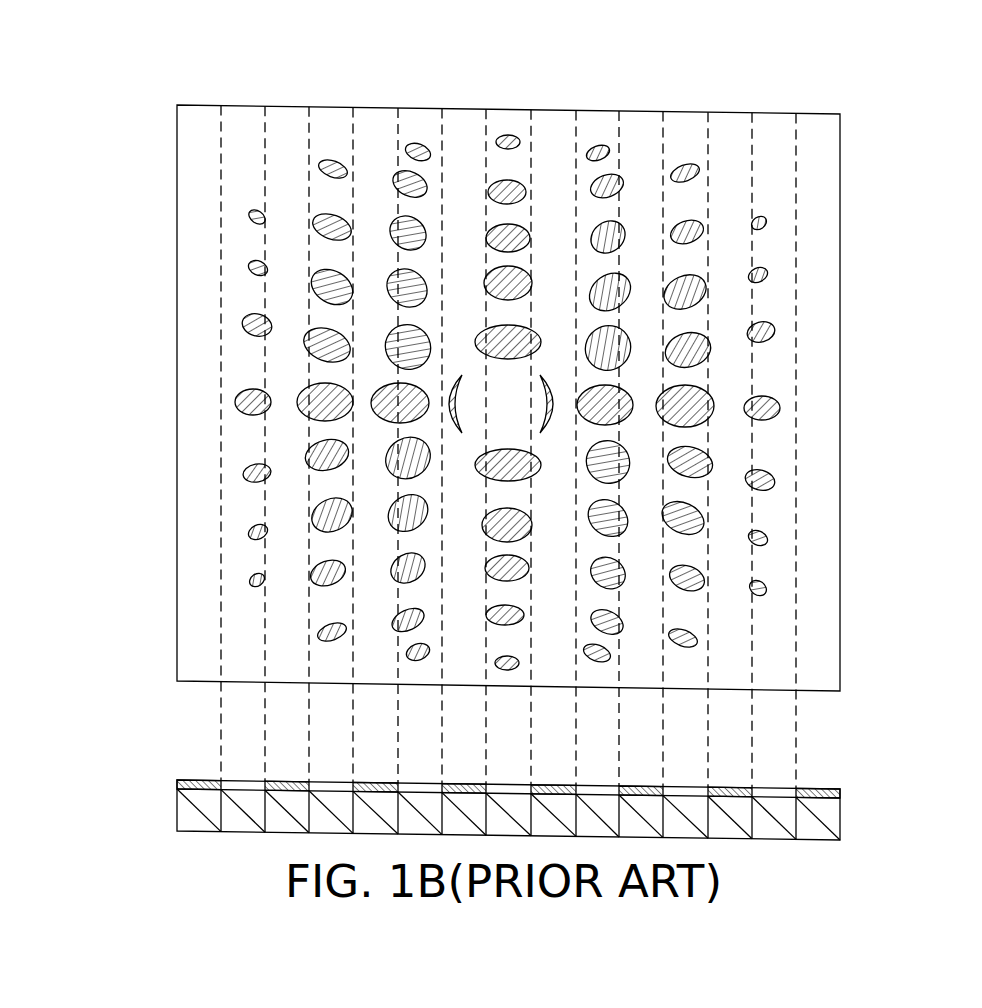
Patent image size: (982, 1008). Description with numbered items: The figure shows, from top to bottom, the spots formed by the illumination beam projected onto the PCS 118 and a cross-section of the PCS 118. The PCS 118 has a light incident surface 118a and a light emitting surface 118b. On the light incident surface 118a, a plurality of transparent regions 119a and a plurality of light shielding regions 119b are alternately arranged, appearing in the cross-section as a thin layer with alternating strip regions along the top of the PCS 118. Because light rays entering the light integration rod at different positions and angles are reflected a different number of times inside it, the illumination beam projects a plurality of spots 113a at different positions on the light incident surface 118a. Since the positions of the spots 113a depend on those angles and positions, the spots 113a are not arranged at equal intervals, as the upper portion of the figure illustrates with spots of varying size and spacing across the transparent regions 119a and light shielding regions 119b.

The spots 113a is at (386, 268).
The PCS 118 is at (872, 525).
The light incident surface 118a is at (204, 766).
The light emitting surface 118b is at (204, 846).
The transparent regions 119a is at (506, 96).
The light shielding regions 119b is at (551, 97).